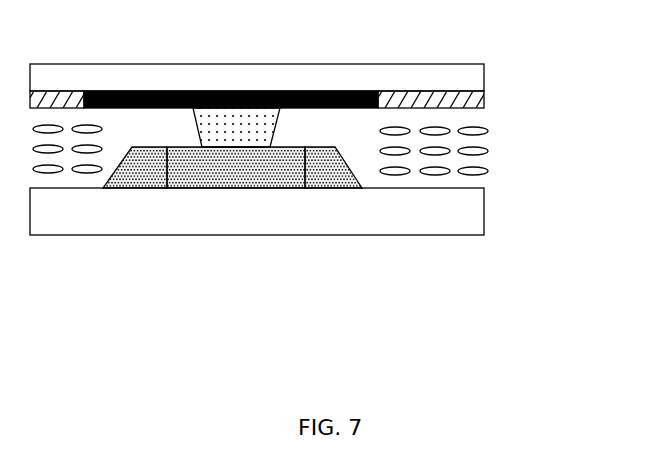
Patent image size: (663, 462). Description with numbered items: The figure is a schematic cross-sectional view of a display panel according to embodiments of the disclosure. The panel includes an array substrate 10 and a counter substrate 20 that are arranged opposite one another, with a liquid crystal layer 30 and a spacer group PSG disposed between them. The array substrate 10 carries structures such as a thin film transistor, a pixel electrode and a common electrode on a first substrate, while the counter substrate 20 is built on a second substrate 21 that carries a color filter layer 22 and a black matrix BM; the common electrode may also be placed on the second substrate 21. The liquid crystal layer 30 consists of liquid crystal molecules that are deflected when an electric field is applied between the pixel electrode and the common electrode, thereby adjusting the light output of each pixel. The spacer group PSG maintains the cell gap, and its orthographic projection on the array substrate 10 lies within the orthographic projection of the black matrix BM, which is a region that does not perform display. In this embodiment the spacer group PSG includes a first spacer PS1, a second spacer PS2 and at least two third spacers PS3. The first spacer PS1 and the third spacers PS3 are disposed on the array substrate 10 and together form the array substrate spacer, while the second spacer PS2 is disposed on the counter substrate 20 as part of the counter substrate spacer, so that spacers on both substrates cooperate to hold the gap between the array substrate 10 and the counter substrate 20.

The counter substrate 20 is at (280, 60).
The second substrate 21 is at (457, 64).
The color filter layer 22 is at (412, 96).
The black matrix BM is at (331, 92).
The liquid crystal layer 30 is at (494, 148).
The array substrate 10 is at (484, 226).
The spacer group PSG is at (231, 221).
The first spacer PS1 is at (236, 172).
The second spacer PS2 is at (223, 133).
The third spacer PS3 is at (385, 285).